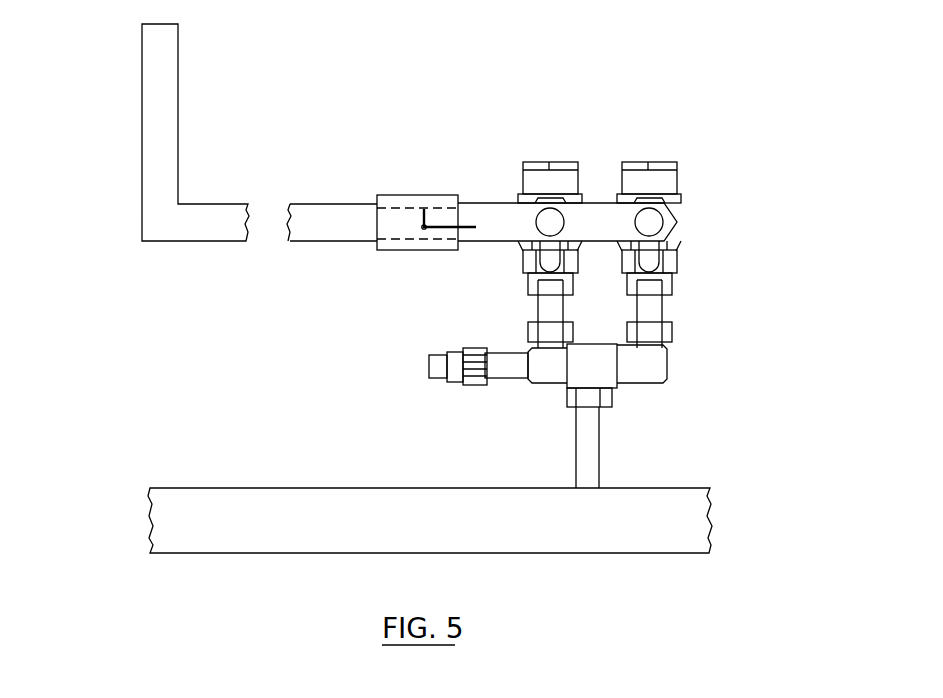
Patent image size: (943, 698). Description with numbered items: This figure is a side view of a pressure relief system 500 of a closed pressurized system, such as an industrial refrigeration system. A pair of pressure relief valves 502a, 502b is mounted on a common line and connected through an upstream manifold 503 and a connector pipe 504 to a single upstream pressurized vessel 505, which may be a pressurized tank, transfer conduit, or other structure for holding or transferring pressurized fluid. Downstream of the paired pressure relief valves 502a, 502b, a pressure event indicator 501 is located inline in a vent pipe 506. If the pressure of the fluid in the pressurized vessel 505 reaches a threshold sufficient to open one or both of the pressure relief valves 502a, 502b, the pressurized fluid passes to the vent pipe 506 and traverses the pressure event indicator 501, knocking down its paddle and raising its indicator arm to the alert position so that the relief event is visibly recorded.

The pressure relief system 500 is at (599, 249).
The pressure event indicator 501 is at (403, 195).
The pressure relief valve 502a is at (520, 245).
The pressure relief valve 502b is at (652, 257).
The upstream manifold 503 is at (615, 364).
The connector pipe 504 is at (588, 438).
The upstream pressurized vessel 505 is at (567, 532).
The vent pipe 506 is at (162, 160).